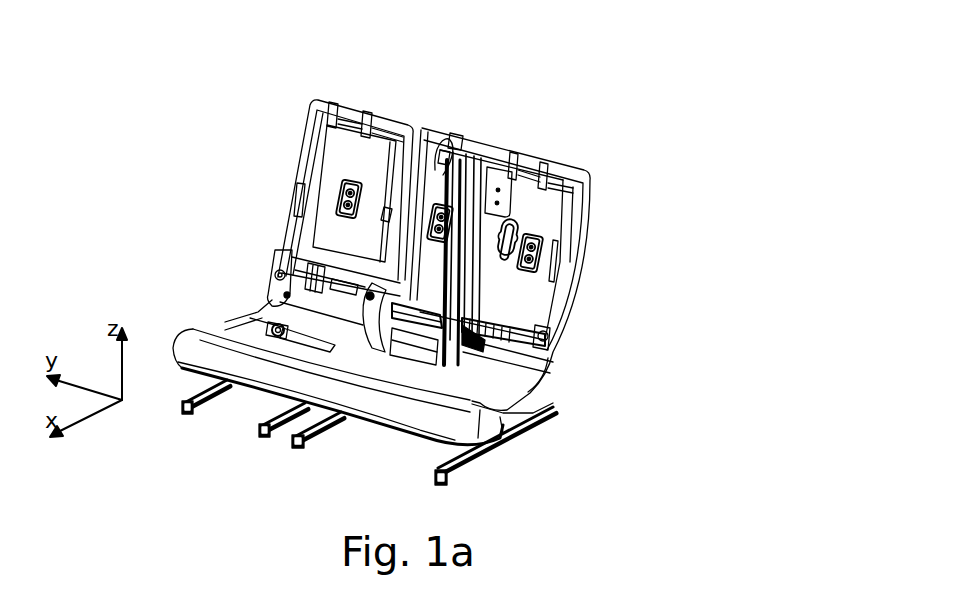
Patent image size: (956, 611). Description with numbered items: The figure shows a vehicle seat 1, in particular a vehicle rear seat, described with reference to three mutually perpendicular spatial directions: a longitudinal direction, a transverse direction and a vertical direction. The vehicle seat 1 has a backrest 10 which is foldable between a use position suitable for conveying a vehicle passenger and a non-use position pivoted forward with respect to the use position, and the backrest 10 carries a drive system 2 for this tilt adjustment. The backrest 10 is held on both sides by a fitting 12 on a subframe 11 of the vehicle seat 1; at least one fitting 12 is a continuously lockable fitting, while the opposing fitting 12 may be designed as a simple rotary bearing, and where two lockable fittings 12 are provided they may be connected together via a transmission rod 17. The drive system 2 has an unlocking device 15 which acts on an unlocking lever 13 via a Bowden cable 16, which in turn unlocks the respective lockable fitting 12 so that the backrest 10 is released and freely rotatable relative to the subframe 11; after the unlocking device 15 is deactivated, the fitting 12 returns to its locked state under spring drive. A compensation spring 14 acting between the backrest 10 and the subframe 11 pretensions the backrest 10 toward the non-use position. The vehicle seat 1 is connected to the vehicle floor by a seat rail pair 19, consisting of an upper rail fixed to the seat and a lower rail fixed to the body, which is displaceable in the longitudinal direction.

The vehicle seat 1 is at (478, 94).
The drive system 2 is at (547, 337).
The backrest 10 is at (567, 176).
The subframe 11 is at (394, 413).
The fitting 12 is at (555, 405).
The unlocking lever 13 is at (428, 295).
The compensation spring 14 is at (415, 297).
The unlocking device 15 is at (529, 225).
The Bowden cable 16 is at (509, 278).
The transmission rod 17 is at (550, 360).
The seat rail pair 19 is at (296, 440).